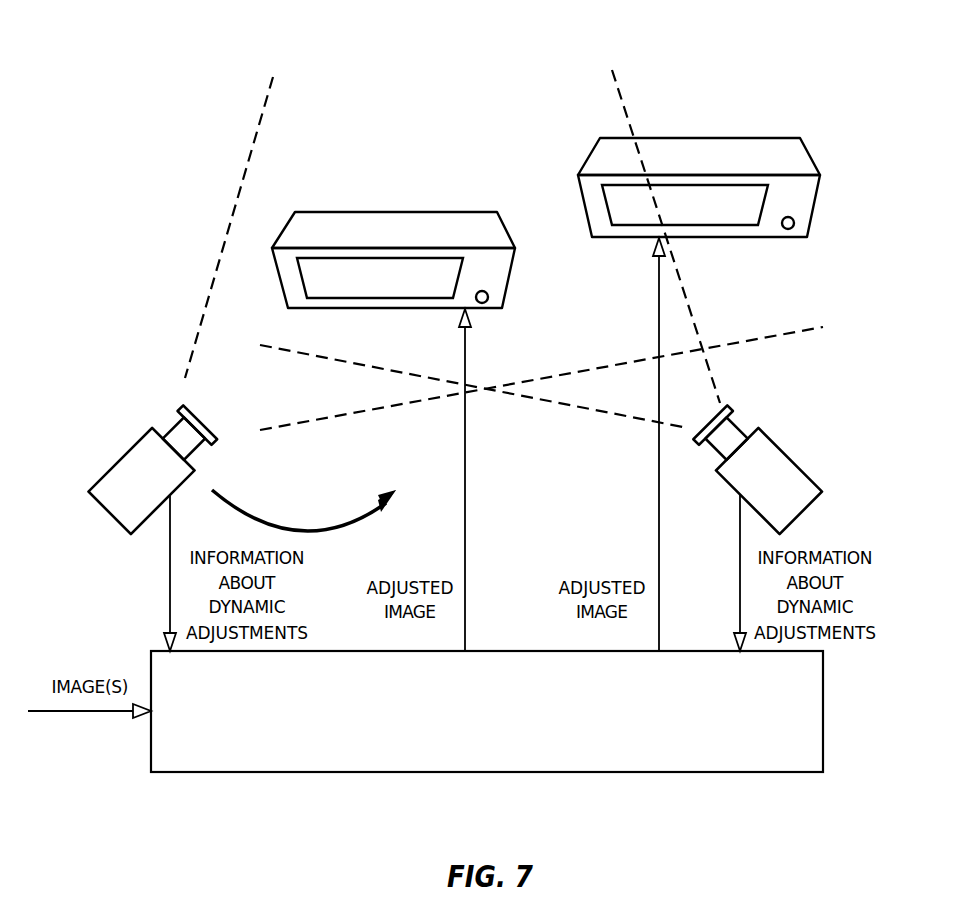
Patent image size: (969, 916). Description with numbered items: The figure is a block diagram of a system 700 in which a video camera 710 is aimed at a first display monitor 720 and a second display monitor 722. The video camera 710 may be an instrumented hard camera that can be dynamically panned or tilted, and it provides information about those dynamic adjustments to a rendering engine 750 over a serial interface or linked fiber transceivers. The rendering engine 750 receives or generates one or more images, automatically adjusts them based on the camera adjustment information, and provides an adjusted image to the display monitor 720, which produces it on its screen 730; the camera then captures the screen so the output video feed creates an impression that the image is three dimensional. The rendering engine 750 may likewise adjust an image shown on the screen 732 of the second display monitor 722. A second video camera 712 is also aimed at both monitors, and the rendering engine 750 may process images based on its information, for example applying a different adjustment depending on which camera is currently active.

The system 700 is at (154, 178).
The video camera 710 is at (200, 420).
The second video camera 712 is at (780, 444).
The first display monitor 720 is at (432, 210).
The second display monitor 722 is at (737, 138).
The screen 730 is at (366, 287).
The screen 732 is at (671, 214).
The rendering engine 750 is at (473, 745).